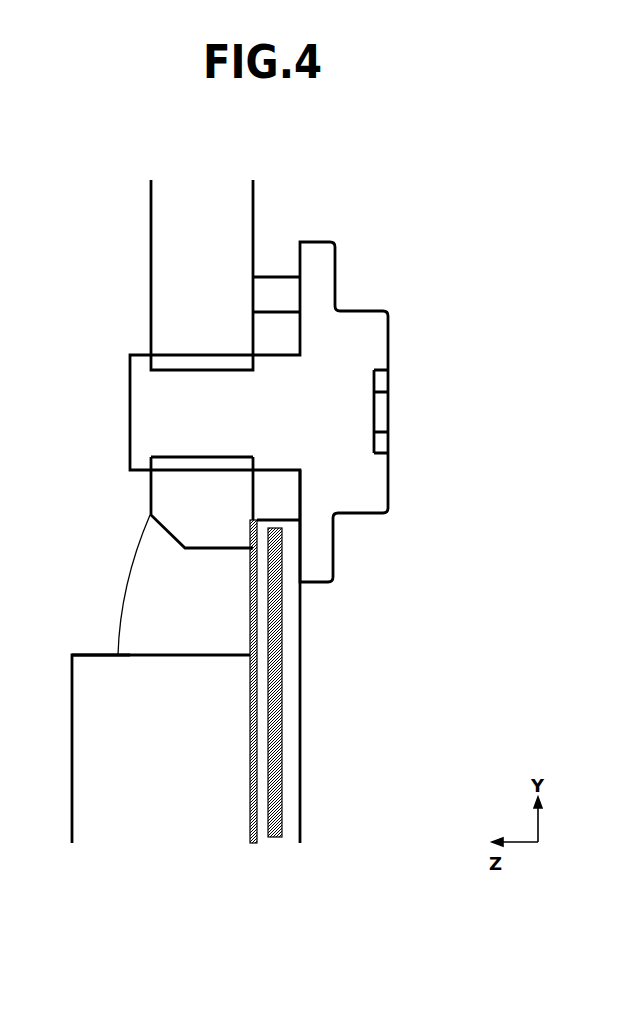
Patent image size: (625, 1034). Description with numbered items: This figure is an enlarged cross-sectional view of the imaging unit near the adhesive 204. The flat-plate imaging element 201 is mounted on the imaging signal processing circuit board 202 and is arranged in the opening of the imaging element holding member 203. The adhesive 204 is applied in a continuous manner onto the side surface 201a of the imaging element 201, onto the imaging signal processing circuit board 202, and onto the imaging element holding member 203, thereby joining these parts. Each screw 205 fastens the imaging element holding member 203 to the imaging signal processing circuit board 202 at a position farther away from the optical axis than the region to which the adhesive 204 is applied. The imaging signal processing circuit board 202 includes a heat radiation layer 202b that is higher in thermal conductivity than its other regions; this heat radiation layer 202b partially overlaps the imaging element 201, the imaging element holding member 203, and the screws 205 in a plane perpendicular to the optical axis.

The imaging element 201 is at (187, 800).
The side surface of the imaging element 201a is at (87, 653).
The imaging signal processing circuit board 202 is at (285, 638).
The heat radiation layer 202b is at (271, 710).
The imaging element holding member 203 is at (218, 503).
The adhesive 204 is at (153, 583).
The screw 205 is at (280, 422).